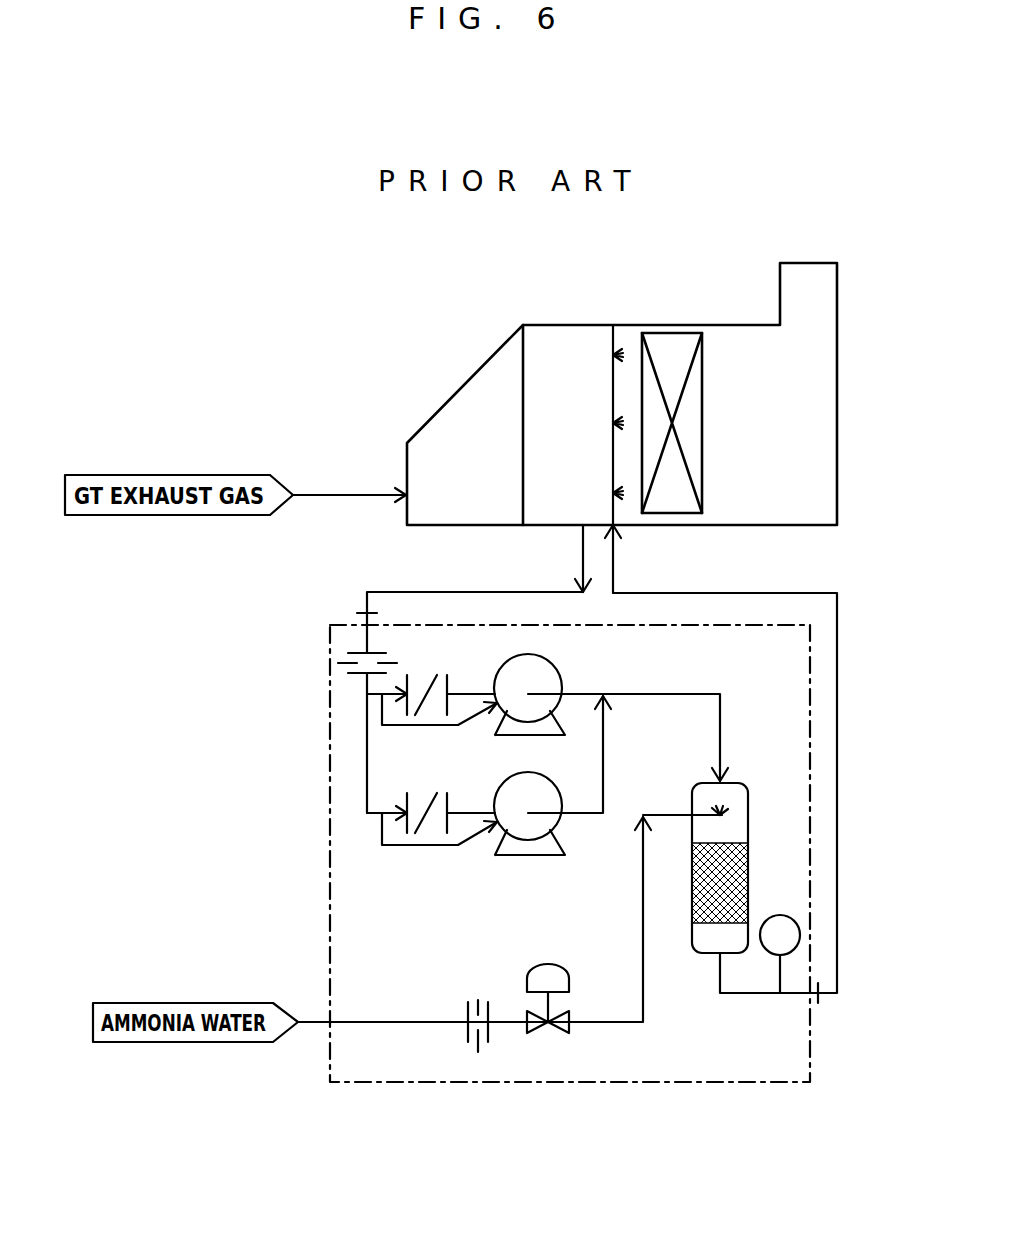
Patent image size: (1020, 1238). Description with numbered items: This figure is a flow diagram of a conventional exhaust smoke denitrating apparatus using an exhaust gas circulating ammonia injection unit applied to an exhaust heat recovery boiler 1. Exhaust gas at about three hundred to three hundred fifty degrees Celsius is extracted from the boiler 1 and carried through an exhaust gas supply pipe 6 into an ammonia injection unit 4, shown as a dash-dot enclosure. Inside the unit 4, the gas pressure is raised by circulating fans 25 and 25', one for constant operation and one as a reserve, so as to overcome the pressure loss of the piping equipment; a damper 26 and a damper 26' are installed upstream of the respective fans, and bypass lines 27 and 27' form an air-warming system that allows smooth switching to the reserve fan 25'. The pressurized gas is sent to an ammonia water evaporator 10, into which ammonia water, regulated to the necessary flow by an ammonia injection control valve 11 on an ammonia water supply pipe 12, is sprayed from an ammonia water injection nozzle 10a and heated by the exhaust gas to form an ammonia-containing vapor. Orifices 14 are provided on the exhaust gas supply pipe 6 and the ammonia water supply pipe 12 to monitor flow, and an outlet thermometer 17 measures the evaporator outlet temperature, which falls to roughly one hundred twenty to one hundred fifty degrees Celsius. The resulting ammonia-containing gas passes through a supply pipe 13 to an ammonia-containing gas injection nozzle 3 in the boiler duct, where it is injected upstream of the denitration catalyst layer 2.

The exhaust heat recovery boiler 1 is at (435, 413).
The denitration catalyst layer 2 is at (668, 333).
The ammonia-containing gas injection nozzle 3 is at (612, 352).
The ammonia injection unit 4 is at (328, 757).
The exhaust gas supply pipe 6 is at (581, 553).
The ammonia water evaporator 10 is at (749, 895).
The ammonia water injection nozzle 10a is at (726, 813).
The ammonia injection control valve 11 is at (548, 968).
The ammonia water supply pipe 12 is at (645, 1016).
The ammonia-containing gas supply pipe 13 is at (615, 560).
The orifice 14 is at (342, 660).
The outlet thermometer 17 is at (800, 935).
The circulating fan 25 is at (611, 714).
The reserve circulating fan 25' is at (552, 775).
The damper 26 is at (431, 679).
The damper 26' is at (431, 800).
The bypass line 27 is at (439, 729).
The bypass line 27' is at (439, 848).